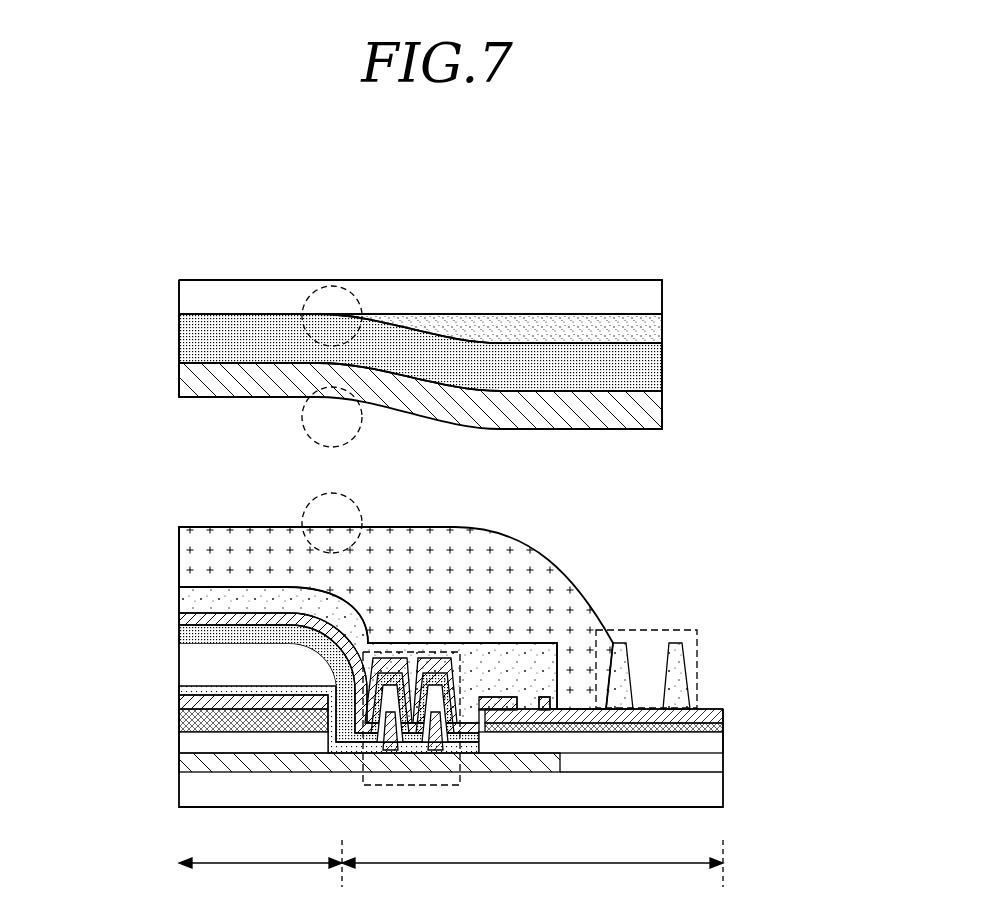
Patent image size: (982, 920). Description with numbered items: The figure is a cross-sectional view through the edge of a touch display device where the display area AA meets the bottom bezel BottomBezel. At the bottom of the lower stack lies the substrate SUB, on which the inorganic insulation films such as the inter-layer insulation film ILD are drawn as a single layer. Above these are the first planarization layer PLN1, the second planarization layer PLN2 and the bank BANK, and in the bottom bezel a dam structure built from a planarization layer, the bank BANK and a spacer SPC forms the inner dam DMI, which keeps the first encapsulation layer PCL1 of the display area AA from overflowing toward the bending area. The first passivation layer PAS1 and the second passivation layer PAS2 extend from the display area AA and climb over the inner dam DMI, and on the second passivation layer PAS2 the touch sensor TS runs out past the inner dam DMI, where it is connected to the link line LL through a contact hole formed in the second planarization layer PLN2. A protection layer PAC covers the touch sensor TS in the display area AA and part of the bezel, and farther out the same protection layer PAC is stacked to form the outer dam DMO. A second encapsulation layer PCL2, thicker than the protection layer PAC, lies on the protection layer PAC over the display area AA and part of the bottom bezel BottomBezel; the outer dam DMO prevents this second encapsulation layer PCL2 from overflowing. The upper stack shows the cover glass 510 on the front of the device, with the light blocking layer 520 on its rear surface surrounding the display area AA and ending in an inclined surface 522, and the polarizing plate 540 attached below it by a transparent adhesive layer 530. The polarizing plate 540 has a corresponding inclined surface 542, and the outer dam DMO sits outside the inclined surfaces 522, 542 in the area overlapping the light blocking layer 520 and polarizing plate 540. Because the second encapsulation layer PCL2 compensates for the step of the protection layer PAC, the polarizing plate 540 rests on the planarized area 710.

The cover glass 510 is at (663, 299).
The light blocking layer 520 is at (663, 330).
The transparent adhesive layer 530 is at (663, 365).
The polarizing plate 540 is at (663, 412).
The inclined surface of the light blocking layer 522 is at (358, 300).
The inclined surface of the polarizing plate 542 is at (358, 430).
The area planarized by the second encapsulation layer 710 is at (360, 505).
The second encapsulation layer PCL2 is at (178, 557).
The protection layer PAC is at (178, 595).
The touch sensor TS is at (178, 617).
The second passivation layer PAS2 is at (178, 635).
The first encapsulation layer PCL1 is at (178, 660).
The first passivation layer PAS1 is at (178, 690).
The bank BANK is at (178, 703).
The second planarization layer PLN2 is at (178, 722).
The first planarization layer PLN1 is at (178, 743).
The inter-layer insulation film ILD is at (178, 765).
The substrate SUB is at (178, 795).
The inner dam DMI is at (423, 652).
The outer dam DMO is at (648, 630).
The link line LL is at (725, 727).
The spacer SPC is at (392, 686).
The display area AA is at (260, 866).
The bottom bezel BottomBezel is at (532, 866).